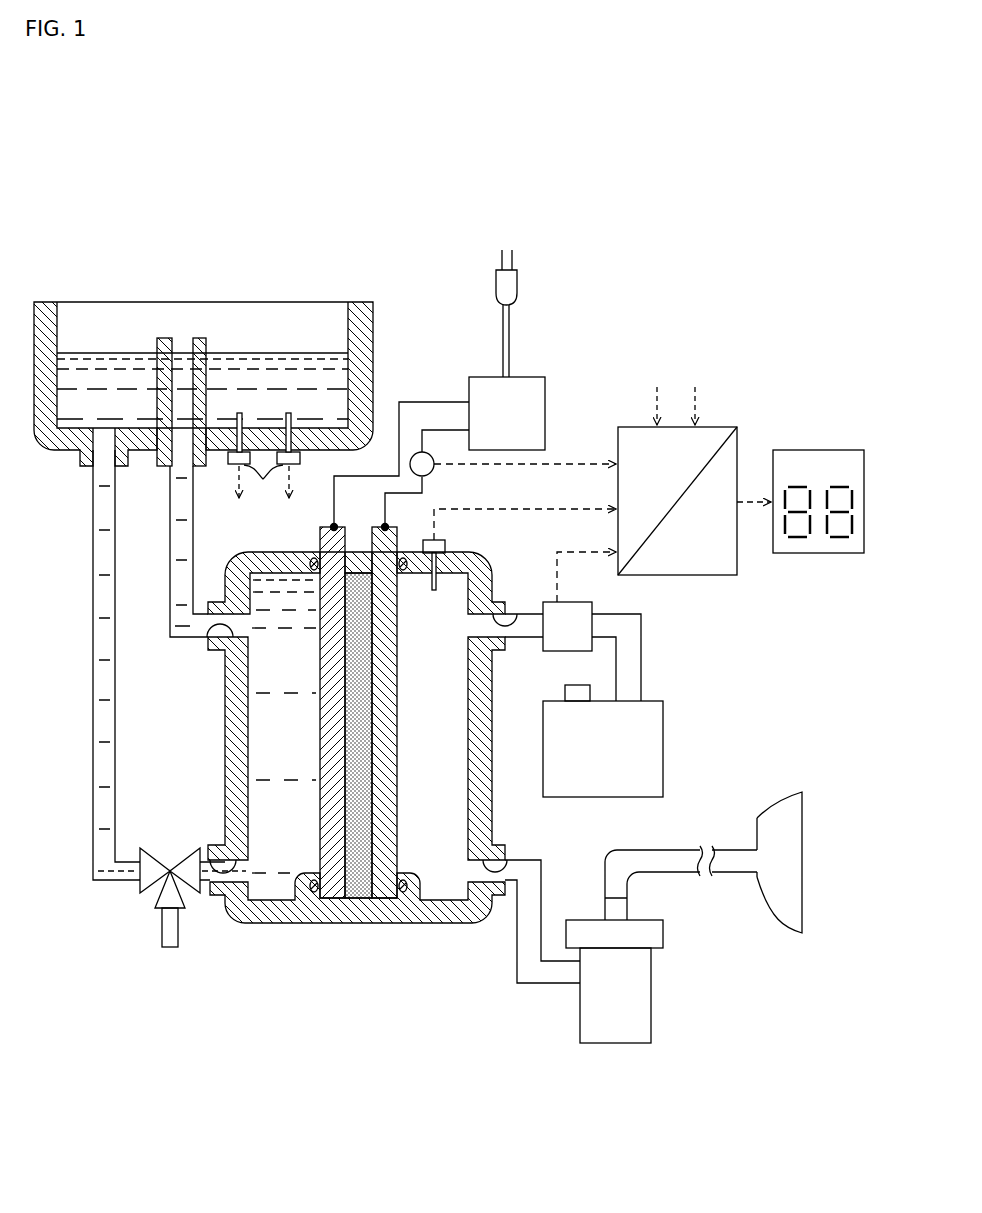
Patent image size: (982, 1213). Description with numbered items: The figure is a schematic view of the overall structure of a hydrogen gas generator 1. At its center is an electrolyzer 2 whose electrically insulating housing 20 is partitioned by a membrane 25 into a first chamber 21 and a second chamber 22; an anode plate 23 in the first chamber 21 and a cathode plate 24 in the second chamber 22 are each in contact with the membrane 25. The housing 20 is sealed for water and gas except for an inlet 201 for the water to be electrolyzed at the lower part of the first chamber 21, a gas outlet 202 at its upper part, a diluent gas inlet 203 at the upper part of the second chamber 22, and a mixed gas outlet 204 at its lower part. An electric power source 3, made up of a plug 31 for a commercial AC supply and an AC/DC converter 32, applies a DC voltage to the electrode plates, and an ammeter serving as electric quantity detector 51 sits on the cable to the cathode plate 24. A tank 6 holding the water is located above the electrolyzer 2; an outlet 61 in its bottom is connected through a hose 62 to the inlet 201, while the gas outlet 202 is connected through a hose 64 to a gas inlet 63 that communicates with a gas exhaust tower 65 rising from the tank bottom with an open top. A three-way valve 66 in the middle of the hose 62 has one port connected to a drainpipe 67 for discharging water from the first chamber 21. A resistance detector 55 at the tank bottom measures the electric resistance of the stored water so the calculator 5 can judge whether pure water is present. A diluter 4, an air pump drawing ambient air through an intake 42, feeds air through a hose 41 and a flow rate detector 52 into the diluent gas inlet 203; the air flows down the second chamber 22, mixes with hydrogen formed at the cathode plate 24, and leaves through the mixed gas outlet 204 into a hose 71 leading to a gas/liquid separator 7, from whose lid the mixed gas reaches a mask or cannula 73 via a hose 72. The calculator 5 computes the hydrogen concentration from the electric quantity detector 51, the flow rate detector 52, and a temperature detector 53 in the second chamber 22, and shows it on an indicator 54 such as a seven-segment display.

The hydrogen gas generator 1 is at (682, 247).
The electrolyzer 2 is at (354, 740).
The housing 20 is at (230, 730).
The first chamber 21 is at (270, 712).
The second chamber 22 is at (452, 745).
The anode plate 23 is at (328, 523).
The cathode plate 24 is at (388, 542).
The membrane 25 is at (362, 905).
The inlet for the water to be electrolyzed 201 is at (210, 850).
The gas outlet 202 is at (212, 630).
The diluent gas inlet 203 is at (517, 612).
The mixed gas outlet 204 is at (508, 870).
The electric power source 3 is at (472, 388).
The plug 31 is at (512, 284).
The AC/DC converter 32 is at (535, 406).
The diluter 4 is at (617, 674).
The hose 41 is at (627, 647).
The intake 42 is at (578, 690).
The calculator 5 is at (741, 467).
The electric quantity detector 51 is at (435, 470).
The flow rate detector 52 is at (560, 648).
The temperature detector 53 is at (445, 543).
The indicator 54 is at (812, 462).
The resistance detector 55 is at (264, 460).
The tank 6 is at (212, 387).
The outlet for the water to be electrolyzed 61 is at (100, 456).
The hose 62 is at (100, 743).
The gas inlet 63 is at (183, 462).
The hose 64 is at (178, 540).
The gas exhaust tower 65 is at (200, 376).
The three-way valve 66 is at (166, 907).
The drainpipe 67 is at (175, 935).
The gas/liquid separator 7 is at (661, 891).
The hose 71 is at (527, 973).
The hose 72 is at (690, 848).
The mask or cannula 73 is at (790, 790).